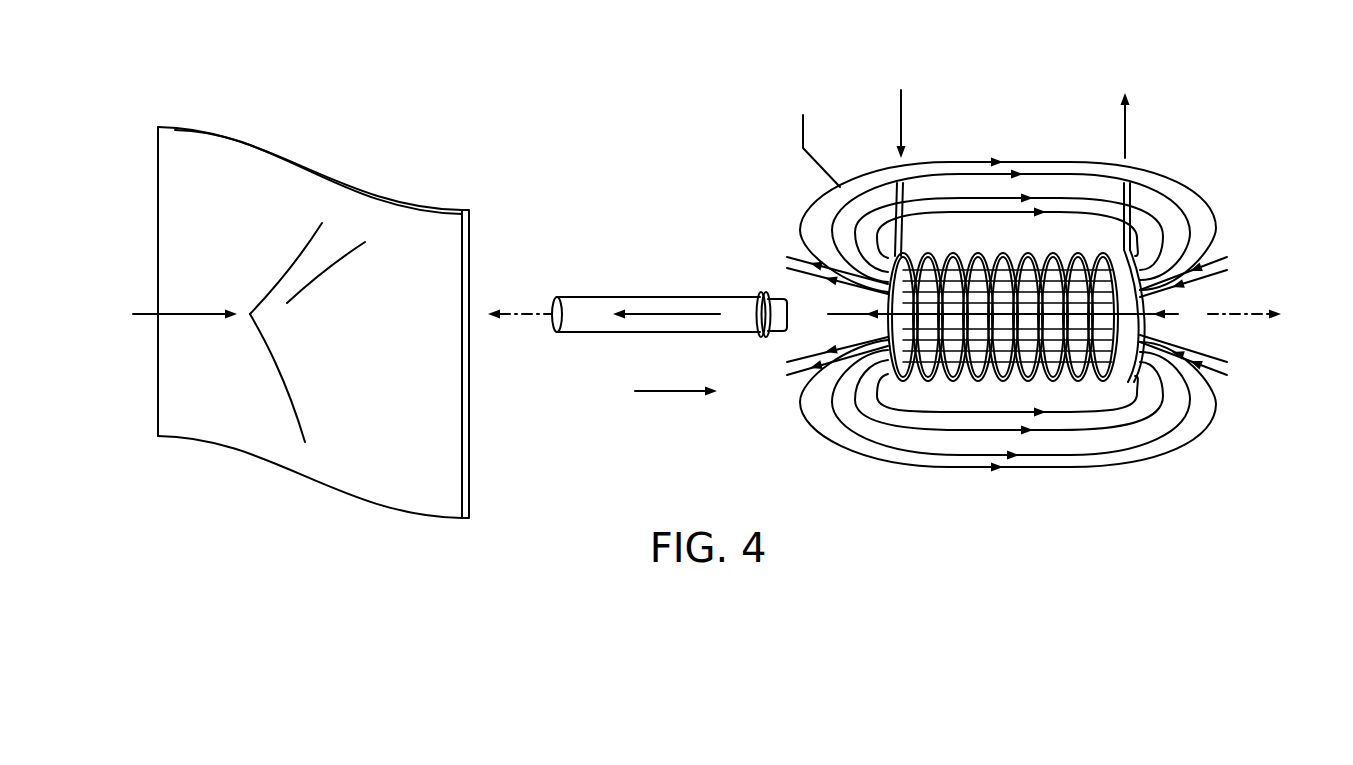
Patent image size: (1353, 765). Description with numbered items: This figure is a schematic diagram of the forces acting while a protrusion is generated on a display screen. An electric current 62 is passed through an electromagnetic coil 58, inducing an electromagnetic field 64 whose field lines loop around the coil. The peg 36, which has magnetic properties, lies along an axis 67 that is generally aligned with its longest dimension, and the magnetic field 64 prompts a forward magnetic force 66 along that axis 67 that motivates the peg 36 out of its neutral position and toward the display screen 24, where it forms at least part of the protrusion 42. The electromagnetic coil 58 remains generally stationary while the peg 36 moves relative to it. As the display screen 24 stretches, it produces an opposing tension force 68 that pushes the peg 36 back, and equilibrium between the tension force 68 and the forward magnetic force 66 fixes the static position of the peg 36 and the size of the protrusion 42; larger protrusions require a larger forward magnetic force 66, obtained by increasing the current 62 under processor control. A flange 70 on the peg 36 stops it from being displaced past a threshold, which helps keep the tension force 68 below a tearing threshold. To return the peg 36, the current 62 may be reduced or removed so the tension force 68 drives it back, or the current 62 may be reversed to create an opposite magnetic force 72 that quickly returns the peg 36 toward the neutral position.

The display screen 24 is at (319, 157).
The protrusion 42 is at (301, 337).
The tension force 68 is at (180, 314).
The axis 67 is at (531, 312).
The peg 36 is at (607, 296).
The forward magnetic force 66 is at (697, 316).
The flange 70 is at (766, 292).
The opposite magnetic force 72 is at (663, 394).
The electromagnetic coil 58 is at (1076, 400).
The electric current 62 is at (899, 128).
The electromagnetic field 64 is at (770, 201).